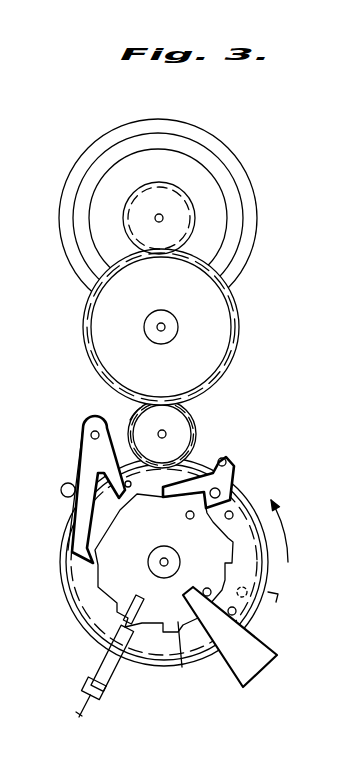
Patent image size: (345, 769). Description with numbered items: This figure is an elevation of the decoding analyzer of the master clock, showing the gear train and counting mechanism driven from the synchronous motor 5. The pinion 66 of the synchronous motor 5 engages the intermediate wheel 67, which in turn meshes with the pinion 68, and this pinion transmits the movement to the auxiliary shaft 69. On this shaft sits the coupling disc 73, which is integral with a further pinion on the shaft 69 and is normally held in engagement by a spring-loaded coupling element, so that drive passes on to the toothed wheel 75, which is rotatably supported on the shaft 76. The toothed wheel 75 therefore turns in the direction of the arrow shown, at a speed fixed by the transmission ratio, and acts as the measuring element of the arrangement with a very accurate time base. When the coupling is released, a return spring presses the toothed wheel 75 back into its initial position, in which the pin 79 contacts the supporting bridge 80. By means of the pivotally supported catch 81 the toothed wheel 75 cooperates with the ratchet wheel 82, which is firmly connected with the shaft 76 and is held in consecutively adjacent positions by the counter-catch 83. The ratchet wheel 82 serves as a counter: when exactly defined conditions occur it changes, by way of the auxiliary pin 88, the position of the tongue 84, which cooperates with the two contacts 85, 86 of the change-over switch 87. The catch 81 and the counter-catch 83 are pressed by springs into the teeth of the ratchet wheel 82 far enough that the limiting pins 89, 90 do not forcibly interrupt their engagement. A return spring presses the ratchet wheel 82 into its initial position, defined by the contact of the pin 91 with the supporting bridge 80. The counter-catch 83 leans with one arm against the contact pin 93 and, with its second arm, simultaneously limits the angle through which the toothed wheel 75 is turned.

The synchronous motor 5 is at (223, 153).
The pinion 66 is at (197, 210).
The intermediate wheel 67 is at (218, 325).
The pinion 68 is at (168, 415).
The auxiliary shaft 69 is at (166, 433).
The coupling disc 73 is at (128, 416).
The toothed wheel 75 is at (92, 602).
The shaft 76 is at (150, 563).
The pin 79 is at (232, 513).
The supporting bridge 80 is at (255, 650).
The catch 81 is at (235, 468).
The ratchet wheel 82 is at (188, 655).
The counter-catch 83 is at (88, 447).
The tongue 84 is at (92, 680).
The contact 85 is at (98, 662).
The contact 86 is at (105, 680).
The change-over switch 87 is at (73, 706).
The auxiliary pin 88 is at (186, 515).
The limiting pin 89 is at (125, 485).
The limiting pin 90 is at (225, 458).
The pin 91 is at (207, 592).
The contact pin 93 is at (61, 492).